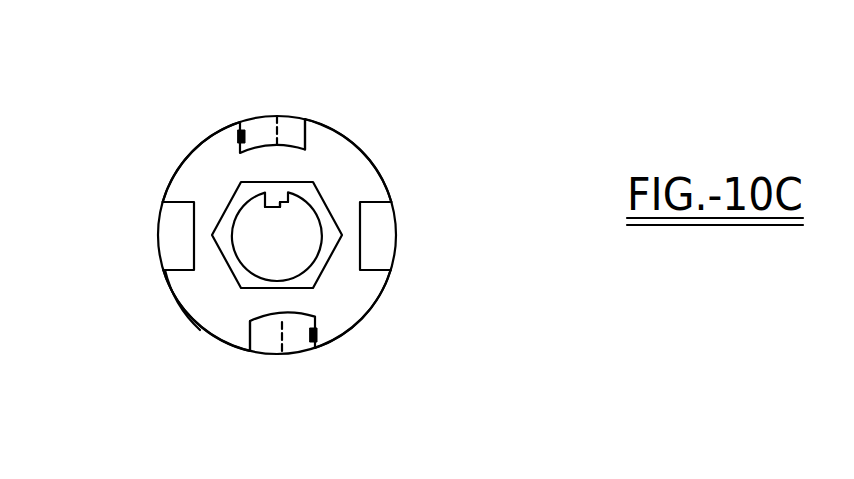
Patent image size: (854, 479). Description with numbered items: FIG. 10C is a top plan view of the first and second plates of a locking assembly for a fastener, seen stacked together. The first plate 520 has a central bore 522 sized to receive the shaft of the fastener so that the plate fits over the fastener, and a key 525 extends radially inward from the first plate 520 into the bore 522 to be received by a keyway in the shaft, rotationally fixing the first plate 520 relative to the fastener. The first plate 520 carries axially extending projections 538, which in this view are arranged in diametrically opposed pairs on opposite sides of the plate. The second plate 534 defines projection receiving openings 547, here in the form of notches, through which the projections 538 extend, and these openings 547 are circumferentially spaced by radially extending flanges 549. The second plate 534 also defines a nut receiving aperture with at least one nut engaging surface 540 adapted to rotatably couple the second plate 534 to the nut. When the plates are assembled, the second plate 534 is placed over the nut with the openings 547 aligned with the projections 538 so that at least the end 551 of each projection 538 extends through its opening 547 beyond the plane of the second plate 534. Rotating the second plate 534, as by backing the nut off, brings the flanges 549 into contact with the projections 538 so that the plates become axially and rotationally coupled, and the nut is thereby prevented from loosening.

The first plate 520 is at (163, 258).
The bore 522 is at (261, 257).
The key 525 is at (288, 205).
The second plate 534 is at (177, 297).
The projection 538 is at (295, 120).
The nut engaging surface 540 is at (302, 284).
The projection receiving opening 547 is at (181, 230).
The radially extending flange 549 is at (198, 155).
The end 551 is at (306, 132).